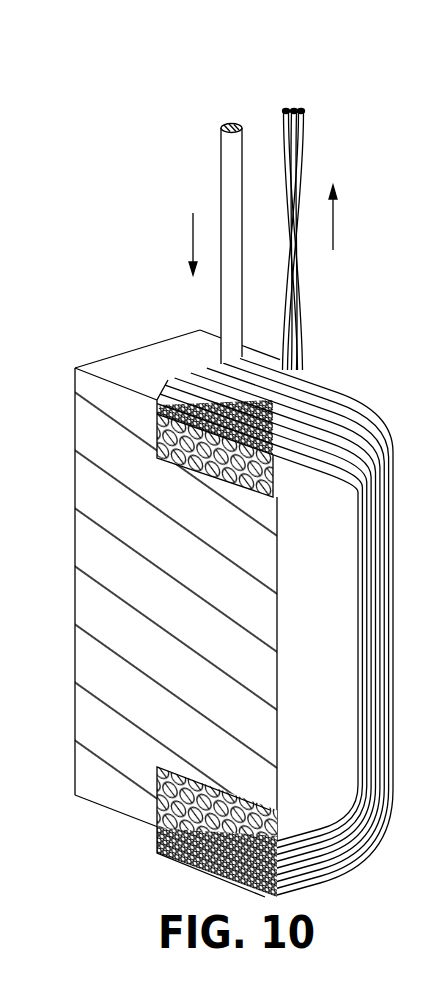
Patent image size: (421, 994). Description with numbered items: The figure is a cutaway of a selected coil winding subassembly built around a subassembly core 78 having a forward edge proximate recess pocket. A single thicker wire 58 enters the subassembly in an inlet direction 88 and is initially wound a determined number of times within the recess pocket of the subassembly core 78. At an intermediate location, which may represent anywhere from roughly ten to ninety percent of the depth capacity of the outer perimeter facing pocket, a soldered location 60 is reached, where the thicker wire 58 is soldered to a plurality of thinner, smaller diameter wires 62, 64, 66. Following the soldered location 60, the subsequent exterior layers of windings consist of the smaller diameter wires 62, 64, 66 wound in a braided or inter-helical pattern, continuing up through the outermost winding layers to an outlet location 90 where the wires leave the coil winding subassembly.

The thicker wire 58 is at (230, 127).
The soldered location 60 is at (177, 470).
The smaller diameter wire 62 is at (286, 108).
The smaller diameter wire 64 is at (294, 108).
The smaller diameter wire 66 is at (300, 130).
The subassembly core 78 is at (88, 615).
The inlet direction 88 is at (190, 232).
The outlet location 90 is at (335, 228).